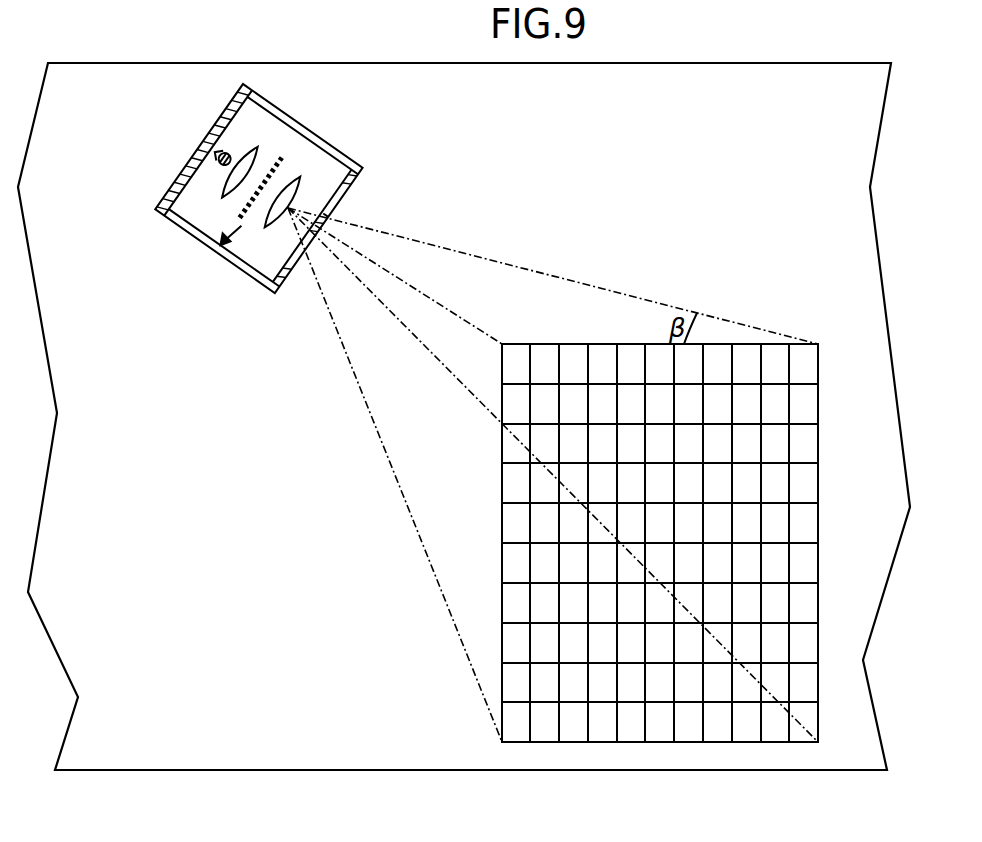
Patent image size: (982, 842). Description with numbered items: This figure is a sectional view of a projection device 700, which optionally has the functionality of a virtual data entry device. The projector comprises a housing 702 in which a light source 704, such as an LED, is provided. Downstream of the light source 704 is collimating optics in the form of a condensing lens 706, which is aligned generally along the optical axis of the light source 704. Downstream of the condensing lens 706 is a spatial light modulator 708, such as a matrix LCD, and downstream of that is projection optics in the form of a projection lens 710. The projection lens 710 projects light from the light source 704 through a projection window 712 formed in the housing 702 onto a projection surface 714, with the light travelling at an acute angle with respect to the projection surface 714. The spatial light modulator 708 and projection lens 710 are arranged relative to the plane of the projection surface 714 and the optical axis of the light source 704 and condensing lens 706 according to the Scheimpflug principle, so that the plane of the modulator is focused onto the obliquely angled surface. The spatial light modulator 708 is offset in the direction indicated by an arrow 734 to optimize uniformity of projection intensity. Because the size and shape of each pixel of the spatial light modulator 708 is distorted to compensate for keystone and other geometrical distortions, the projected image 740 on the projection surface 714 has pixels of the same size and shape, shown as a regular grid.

The projection device 700 is at (258, 150).
The housing 702 is at (258, 188).
The light source 704 is at (222, 157).
The condensing lens 706 is at (239, 172).
The spatial light modulator 708 is at (260, 188).
The projection lens 710 is at (282, 202).
The projection window 712 is at (338, 209).
The projection surface 714 is at (738, 93).
The arrow 734 is at (228, 233).
The projected image 740 is at (575, 357).